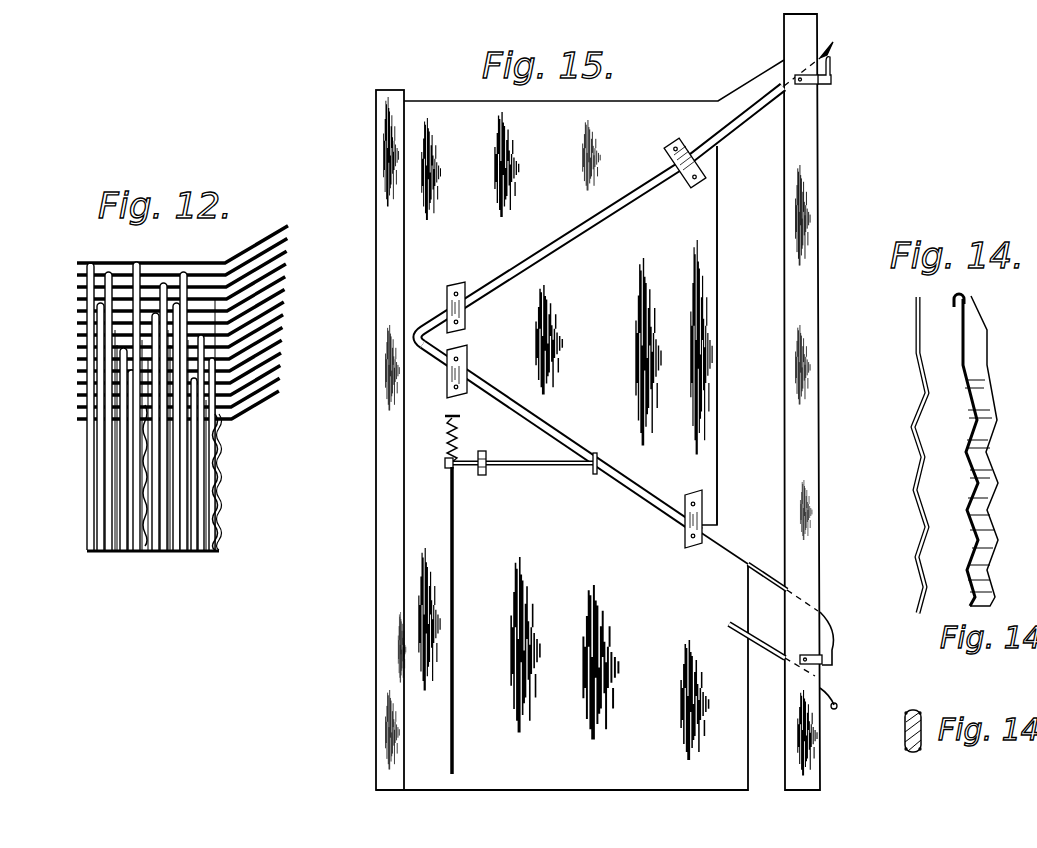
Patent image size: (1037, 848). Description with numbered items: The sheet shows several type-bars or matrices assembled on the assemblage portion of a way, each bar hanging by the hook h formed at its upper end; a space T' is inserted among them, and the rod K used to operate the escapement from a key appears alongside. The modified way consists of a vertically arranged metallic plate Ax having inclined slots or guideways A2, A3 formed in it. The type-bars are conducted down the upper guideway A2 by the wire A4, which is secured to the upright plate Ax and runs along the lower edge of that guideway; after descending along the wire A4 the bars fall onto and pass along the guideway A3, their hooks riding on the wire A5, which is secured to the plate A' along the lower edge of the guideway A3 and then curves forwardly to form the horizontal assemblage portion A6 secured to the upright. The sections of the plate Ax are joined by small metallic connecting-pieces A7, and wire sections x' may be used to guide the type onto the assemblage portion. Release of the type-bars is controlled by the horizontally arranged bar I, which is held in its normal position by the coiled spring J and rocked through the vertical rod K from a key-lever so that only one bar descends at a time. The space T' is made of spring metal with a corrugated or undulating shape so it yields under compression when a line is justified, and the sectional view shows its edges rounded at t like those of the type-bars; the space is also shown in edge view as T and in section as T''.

In FIG. 12, the vertically-arranged rod K is at (90, 463).
In FIG. 15, the vertically-arranged rod K is at (464, 620).
In FIG. 12, the hook h is at (86, 264).
In FIG. 12, the space T' is at (238, 482).
In FIG. 12, the wavy spring strip T'' is at (132, 497).
In FIG. 15, the plate A' is at (598, 402).
In FIG. 15, the inclined guideway A2 is at (566, 222).
In FIG. 15, the inclined guideway A3 is at (640, 490).
In FIG. 15, the wire A4 is at (660, 180).
In FIG. 15, the wire A5 is at (770, 570).
In FIG. 15, the assemblage portion A6 is at (836, 651).
In FIG. 15, the connecting-pieces A7 is at (470, 320).
In FIG. 15, the metallic plate Ax is at (654, 335).
In FIG. 15, the coiled spring J is at (481, 412).
In FIG. 15, the horizontally-arranged bar I is at (522, 466).
In FIG. 15, the wire sections x' is at (771, 666).
In FIG. 14, the spring strip T is at (955, 453).
In FIG. 14B, the spring strip T is at (893, 731).
In FIG. 14B, the rounded edges t is at (906, 712).